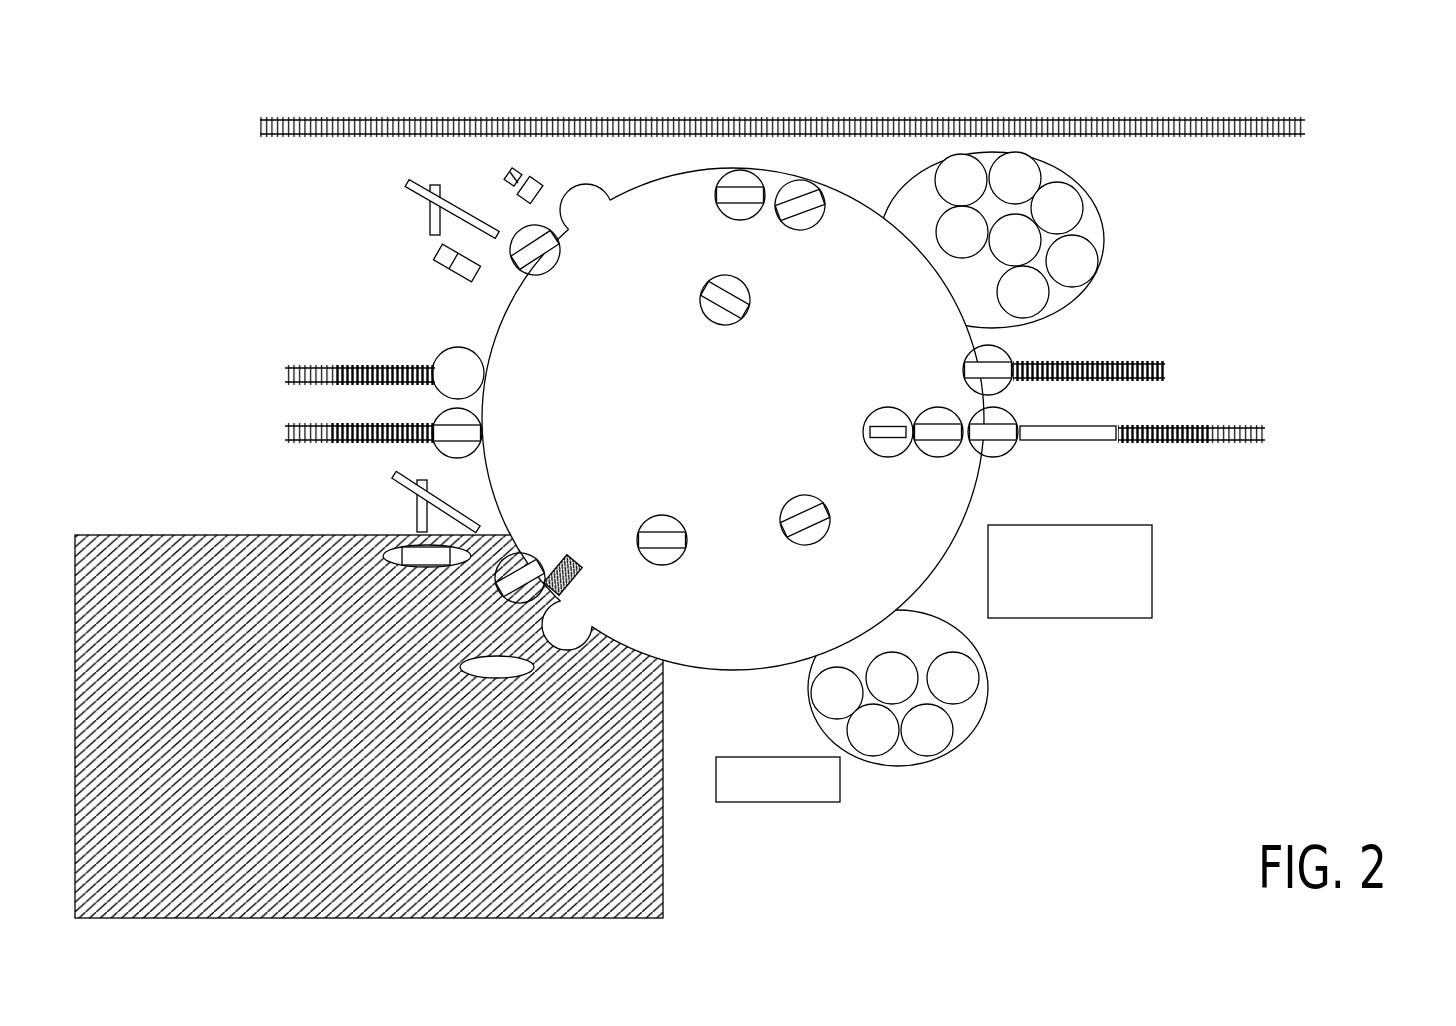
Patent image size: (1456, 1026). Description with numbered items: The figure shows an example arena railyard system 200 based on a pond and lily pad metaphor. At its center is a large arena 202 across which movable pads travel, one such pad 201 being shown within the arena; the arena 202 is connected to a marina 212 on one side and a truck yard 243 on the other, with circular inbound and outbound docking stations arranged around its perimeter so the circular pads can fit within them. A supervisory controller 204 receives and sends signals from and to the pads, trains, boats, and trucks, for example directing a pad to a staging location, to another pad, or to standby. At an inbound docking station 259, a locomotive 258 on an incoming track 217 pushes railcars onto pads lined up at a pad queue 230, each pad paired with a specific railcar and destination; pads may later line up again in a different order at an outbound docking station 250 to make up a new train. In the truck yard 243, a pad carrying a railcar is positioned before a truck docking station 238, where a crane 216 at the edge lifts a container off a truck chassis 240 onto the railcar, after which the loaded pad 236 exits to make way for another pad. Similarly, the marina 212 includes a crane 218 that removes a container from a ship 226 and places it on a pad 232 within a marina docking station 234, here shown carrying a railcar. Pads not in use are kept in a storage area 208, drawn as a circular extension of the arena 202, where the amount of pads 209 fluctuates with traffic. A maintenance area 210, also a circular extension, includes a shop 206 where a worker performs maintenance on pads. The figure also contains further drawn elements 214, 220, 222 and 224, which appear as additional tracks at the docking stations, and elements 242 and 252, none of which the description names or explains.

The arena railyard system 200 is at (1362, 58).
The pad 201 is at (727, 278).
The arena 202 is at (708, 419).
The supervisory controller 204 is at (1032, 525).
The shop 206 is at (742, 757).
The storage area 208 is at (1081, 195).
The pads 209 is at (965, 280).
The maintenance area 210 is at (988, 693).
The marina 212 is at (369, 726).
The track 214 is at (785, 118).
The crane 216 is at (437, 187).
The incoming track 217 is at (1160, 425).
The crane 218 is at (415, 520).
The conveyor track 220 is at (1042, 362).
The conveyor track 222 is at (362, 425).
The conveyor track 224 is at (348, 365).
The ship 226 is at (396, 567).
The pad queue 230 is at (895, 395).
The pad 232 is at (548, 558).
The marina docking station 234 is at (500, 560).
The loaded pad 236 is at (562, 246).
The truck docking station 238 is at (508, 242).
The truck chassis 240 is at (525, 175).
The end effector 242 is at (447, 270).
The truck yard 243 is at (389, 243).
The outbound docking station 250 is at (465, 346).
The substrate 252 is at (478, 421).
The locomotive 258 is at (1048, 425).
The inbound docking station 259 is at (999, 414).